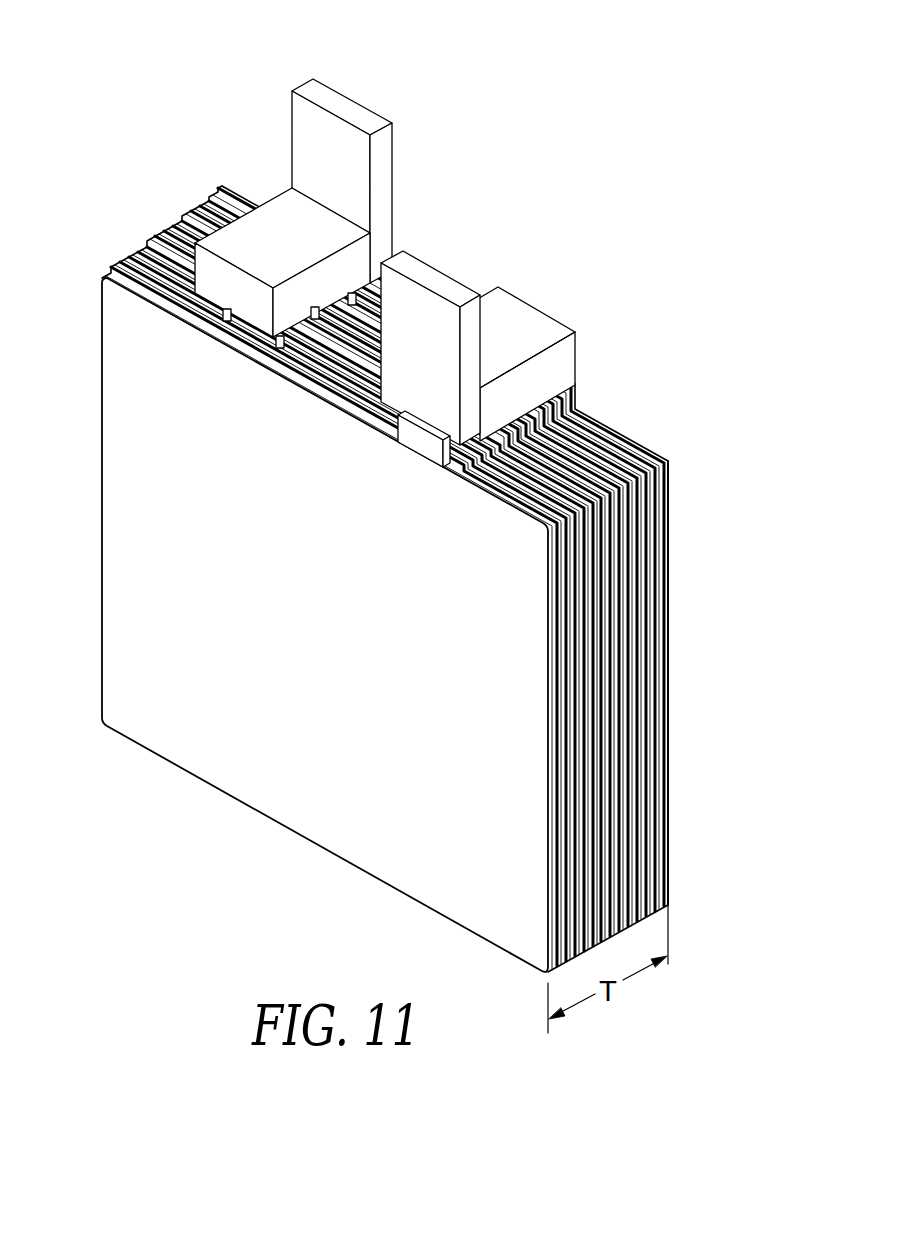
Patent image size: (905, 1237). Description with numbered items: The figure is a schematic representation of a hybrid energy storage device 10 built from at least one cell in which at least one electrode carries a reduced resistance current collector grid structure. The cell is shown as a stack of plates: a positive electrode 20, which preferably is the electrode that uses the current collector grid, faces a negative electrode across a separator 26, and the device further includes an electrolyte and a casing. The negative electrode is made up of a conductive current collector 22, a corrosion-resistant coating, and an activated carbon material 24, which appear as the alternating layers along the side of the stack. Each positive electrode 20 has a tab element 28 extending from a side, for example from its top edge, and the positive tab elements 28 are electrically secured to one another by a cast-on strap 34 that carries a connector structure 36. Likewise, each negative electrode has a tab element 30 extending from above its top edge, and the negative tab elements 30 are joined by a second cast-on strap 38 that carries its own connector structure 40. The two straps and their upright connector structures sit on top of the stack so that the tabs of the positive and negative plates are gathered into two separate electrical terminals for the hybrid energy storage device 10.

The hybrid energy storage device 10 is at (428, 488).
The positive electrode 20 is at (556, 790).
The conductive current collector 22 is at (652, 446).
The activated carbon material 24 is at (654, 480).
The separator 26 is at (661, 771).
The tab element 28 is at (415, 433).
The tab element 30 is at (250, 325).
The cast-on strap 34 is at (558, 363).
The connector structure 36 is at (426, 277).
The cast-on strap 38 is at (283, 222).
The connector structure 40 is at (311, 77).